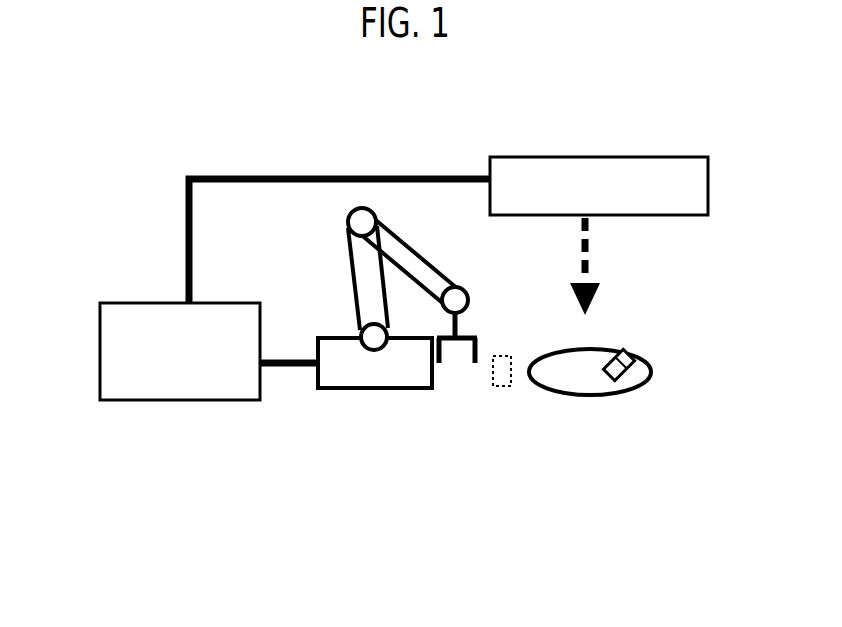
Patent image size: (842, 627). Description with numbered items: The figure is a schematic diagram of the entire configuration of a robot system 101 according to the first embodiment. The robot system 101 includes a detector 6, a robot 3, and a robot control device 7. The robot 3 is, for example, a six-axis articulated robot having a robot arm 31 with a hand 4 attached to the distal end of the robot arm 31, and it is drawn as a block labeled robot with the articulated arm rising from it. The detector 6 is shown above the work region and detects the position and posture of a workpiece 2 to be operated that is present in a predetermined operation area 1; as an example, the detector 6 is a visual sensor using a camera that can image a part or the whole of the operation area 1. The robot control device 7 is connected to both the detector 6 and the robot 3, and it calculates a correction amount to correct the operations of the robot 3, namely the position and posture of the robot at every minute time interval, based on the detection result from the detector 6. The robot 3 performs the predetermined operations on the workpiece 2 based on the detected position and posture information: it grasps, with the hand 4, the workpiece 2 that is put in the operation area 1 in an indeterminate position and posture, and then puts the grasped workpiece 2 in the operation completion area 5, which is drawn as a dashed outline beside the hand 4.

The robot system 101 is at (456, 124).
The operation area 1 is at (590, 383).
The workpiece 2 is at (636, 366).
The robot 3 is at (373, 334).
The robot arm 31 is at (351, 278).
The hand 4 is at (477, 323).
The operation completion area 5 is at (497, 387).
The detector 6 is at (673, 156).
The robot control device 7 is at (177, 401).